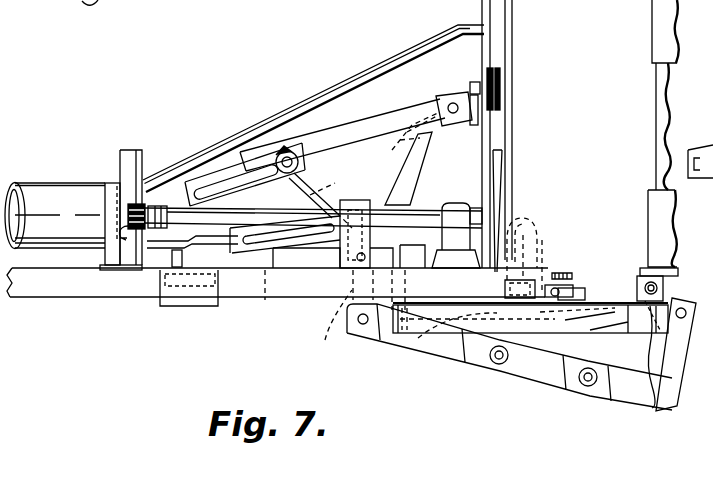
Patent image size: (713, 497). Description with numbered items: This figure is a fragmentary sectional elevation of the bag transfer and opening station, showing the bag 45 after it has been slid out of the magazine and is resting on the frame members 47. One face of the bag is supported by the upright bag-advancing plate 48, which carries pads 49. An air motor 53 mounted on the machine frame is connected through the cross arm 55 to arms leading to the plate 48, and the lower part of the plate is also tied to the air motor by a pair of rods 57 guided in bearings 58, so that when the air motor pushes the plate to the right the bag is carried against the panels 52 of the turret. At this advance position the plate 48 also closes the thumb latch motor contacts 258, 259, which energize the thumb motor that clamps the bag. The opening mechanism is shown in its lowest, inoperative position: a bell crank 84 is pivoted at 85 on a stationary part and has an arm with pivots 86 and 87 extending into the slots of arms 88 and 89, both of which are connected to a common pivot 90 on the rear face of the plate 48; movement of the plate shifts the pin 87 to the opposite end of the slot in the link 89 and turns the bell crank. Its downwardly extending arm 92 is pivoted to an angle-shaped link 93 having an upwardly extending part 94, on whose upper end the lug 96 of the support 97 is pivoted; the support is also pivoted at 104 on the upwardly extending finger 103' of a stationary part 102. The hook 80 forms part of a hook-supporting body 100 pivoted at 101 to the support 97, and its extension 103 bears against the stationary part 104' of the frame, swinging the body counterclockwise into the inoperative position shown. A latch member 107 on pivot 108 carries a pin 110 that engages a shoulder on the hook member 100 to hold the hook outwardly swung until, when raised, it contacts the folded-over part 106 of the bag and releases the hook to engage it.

The bag 45 is at (515, 42).
The frame members 47 is at (68, 298).
The bag-advancing plate 48 is at (515, 8).
The pads 49 is at (503, 100).
The panels 52 is at (655, 30).
The air motor 53 is at (38, 184).
The cross arm 55 is at (130, 210).
The rods 57 is at (430, 197).
The bearings 58 is at (458, 204).
The hook 80 is at (515, 238).
The bell crank 84 is at (322, 205).
The pivot 85 is at (352, 292).
The pivot 86 is at (294, 153).
The pivot 87 is at (348, 200).
The slotted arm 88 is at (401, 114).
The slotted arm 89 is at (418, 148).
The common pivot 90 is at (452, 96).
The downwardly extending arm 92 is at (333, 338).
The angle-shaped link 93 is at (531, 372).
The upwardly extending part 94 is at (684, 372).
The lug or arm 96 is at (680, 322).
The support 97 is at (640, 292).
The hook-supporting body 100 is at (422, 333).
The pivot 101 is at (464, 338).
The stationary part 102 is at (398, 336).
The extension 103 is at (601, 336).
The upwardly extending finger 103' is at (635, 370).
The pivot 104 is at (645, 233).
The stationary part 104' is at (580, 393).
The folded-over part 106 is at (500, 150).
The latch member 107 is at (572, 288).
The pivot 108 is at (562, 285).
The pin or extension 110 is at (533, 241).
The thumb latch motor contact 258 is at (188, 306).
The thumb latch motor contact 259 is at (160, 338).